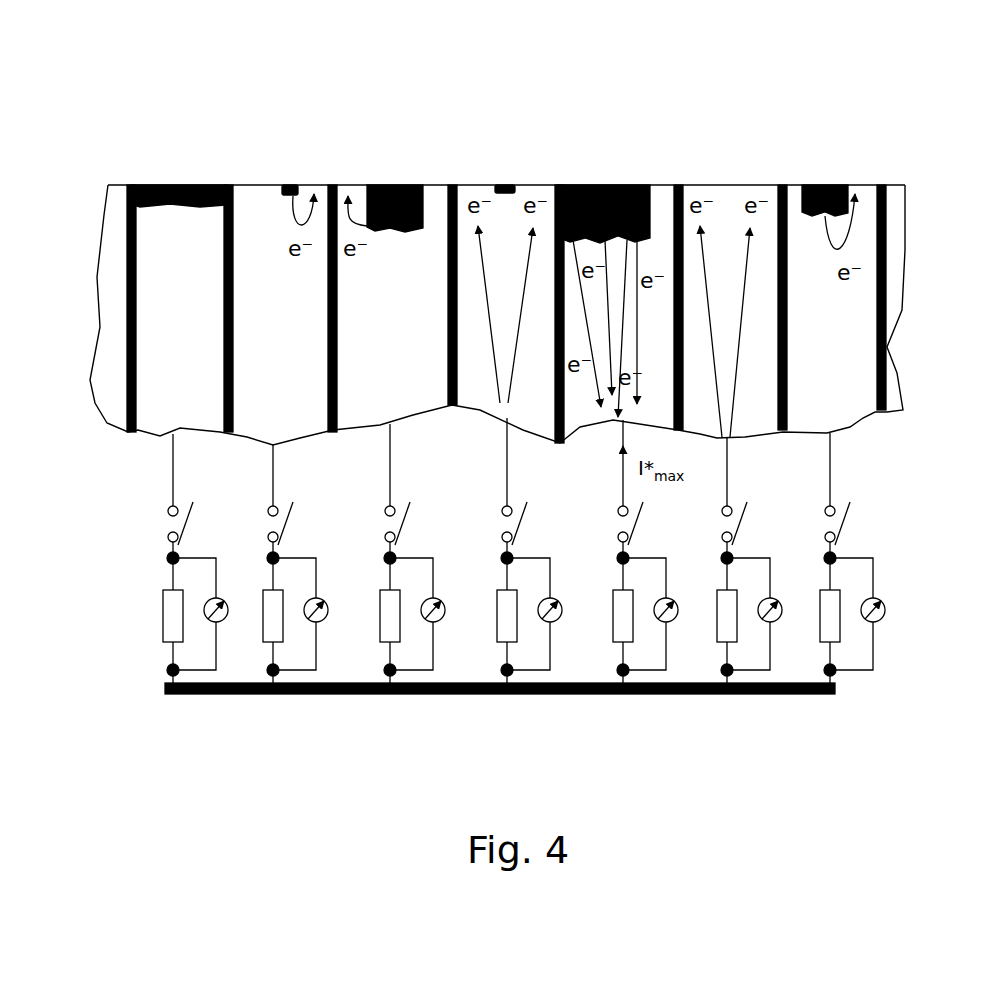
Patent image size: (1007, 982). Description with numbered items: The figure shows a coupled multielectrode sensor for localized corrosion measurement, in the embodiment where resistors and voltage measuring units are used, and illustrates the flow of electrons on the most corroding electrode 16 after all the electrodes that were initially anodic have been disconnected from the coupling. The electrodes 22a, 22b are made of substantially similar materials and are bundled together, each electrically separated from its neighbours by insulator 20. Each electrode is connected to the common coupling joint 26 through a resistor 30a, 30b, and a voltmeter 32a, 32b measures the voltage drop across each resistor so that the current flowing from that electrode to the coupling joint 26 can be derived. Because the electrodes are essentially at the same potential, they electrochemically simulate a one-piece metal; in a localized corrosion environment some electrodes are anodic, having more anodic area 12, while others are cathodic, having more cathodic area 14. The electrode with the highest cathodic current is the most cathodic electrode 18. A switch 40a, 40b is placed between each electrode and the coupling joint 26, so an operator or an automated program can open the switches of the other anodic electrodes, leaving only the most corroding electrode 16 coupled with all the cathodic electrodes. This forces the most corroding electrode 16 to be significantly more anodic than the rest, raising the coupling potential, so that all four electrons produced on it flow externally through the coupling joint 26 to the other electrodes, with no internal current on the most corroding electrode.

The anodic area 12 is at (163, 183).
The cathodic area 14 is at (276, 183).
The most corroding electrode 16 is at (634, 166).
The most cathodic electrode 18 is at (741, 166).
The insulator 20 is at (883, 183).
The electrode 22a is at (165, 436).
The electrode 22b is at (853, 431).
The coupling joint 26 is at (585, 695).
The resistor 30a is at (163, 600).
The resistor 30b is at (835, 633).
The voltmeter 32a is at (228, 618).
The voltmeter 32b is at (887, 617).
The switch 40a is at (167, 528).
The switch 40b is at (838, 508).